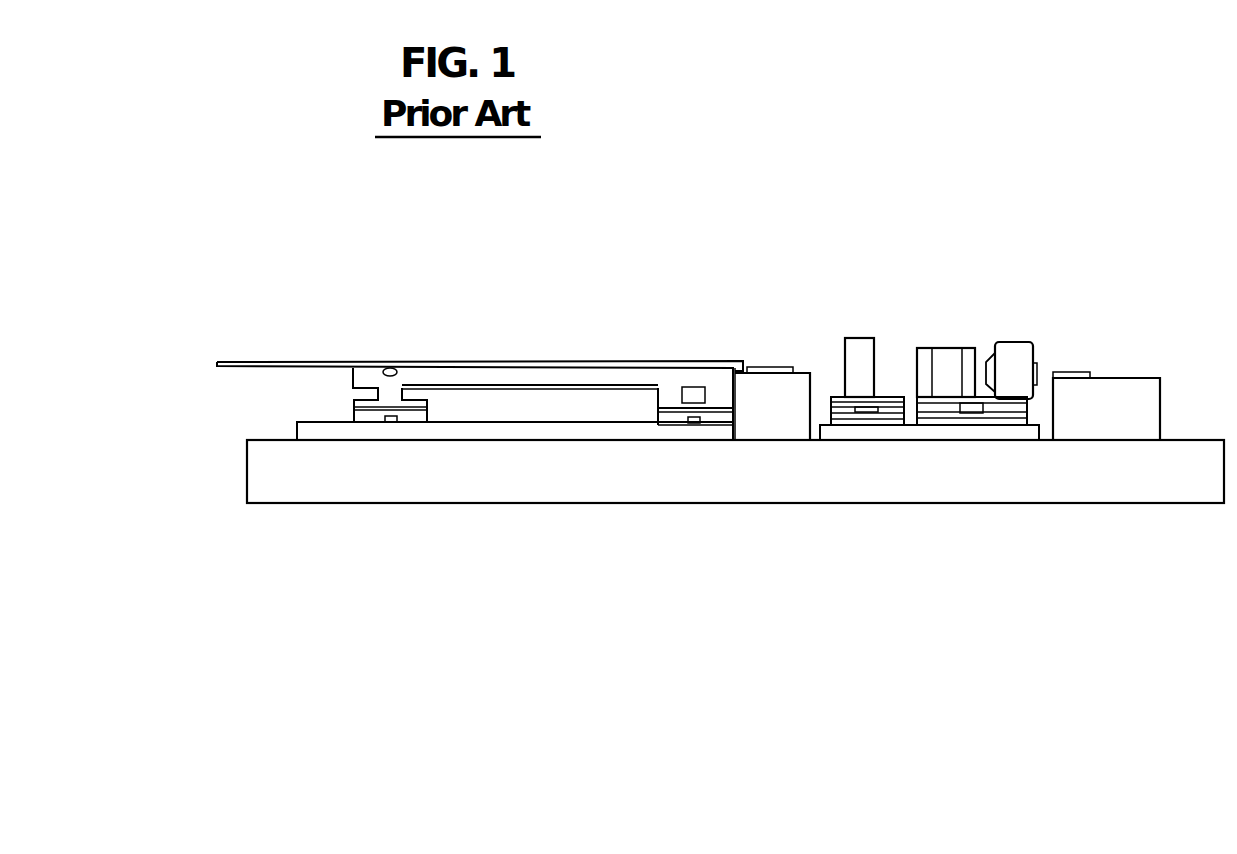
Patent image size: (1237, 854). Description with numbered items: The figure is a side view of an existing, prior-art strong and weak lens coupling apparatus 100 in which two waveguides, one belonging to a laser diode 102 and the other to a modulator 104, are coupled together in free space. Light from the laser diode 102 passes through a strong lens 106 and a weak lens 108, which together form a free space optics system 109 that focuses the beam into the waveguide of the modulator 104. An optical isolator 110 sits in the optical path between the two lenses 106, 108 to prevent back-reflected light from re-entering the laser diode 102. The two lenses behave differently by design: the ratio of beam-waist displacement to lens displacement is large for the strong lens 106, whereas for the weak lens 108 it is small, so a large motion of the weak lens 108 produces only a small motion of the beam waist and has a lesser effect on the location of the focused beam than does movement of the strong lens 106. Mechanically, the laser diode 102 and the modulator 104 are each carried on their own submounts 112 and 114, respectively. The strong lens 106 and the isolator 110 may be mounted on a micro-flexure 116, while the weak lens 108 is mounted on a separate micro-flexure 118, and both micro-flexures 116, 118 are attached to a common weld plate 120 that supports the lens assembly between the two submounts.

The strong and weak lens coupling apparatus 100 is at (862, 228).
The laser diode 102 is at (1082, 371).
The modulator 104 is at (770, 367).
The strong lens 106 is at (1017, 341).
The weak lens 108 is at (862, 338).
The free space optics system 109 is at (976, 246).
The optical isolator 110 is at (945, 347).
The submount 112 is at (1137, 432).
The submount 114 is at (763, 430).
The micro-flexure 116 is at (1003, 428).
The micro-flexure 118 is at (867, 425).
The weld plate 120 is at (958, 435).